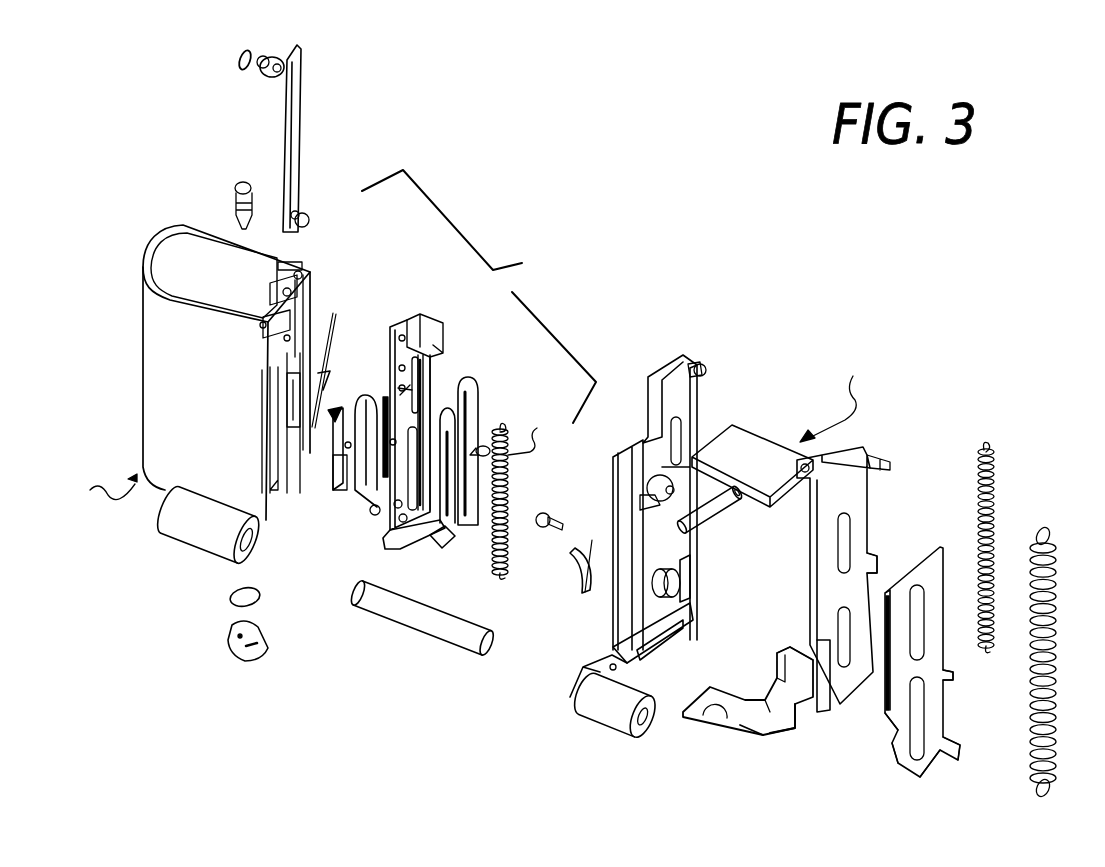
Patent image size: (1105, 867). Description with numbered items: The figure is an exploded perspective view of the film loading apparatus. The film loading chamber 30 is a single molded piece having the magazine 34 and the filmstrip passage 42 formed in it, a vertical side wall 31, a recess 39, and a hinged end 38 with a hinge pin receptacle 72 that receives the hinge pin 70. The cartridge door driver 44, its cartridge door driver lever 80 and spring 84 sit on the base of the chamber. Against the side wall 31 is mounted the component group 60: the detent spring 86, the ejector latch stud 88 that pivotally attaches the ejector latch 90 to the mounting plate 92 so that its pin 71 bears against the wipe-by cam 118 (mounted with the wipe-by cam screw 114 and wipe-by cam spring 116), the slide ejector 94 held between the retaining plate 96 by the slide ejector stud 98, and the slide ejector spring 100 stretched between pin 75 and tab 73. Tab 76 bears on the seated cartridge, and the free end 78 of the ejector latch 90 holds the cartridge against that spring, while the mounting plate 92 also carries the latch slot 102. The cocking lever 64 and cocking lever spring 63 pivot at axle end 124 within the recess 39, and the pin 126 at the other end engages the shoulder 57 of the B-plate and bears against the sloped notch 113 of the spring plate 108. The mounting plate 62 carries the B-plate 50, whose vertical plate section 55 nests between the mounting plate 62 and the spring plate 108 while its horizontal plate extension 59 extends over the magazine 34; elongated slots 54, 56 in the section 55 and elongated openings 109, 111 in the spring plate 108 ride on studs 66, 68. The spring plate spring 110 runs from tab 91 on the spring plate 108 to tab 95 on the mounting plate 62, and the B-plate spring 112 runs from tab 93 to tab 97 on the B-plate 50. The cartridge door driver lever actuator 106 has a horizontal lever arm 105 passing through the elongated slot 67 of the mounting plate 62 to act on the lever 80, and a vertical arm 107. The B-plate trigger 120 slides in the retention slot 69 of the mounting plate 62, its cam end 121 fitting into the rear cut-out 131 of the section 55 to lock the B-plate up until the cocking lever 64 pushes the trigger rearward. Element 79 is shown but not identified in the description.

The film loading chamber 30 is at (101, 482).
The vertical side wall 31 is at (300, 292).
The magazine 34 is at (197, 238).
The hinged end 38 is at (175, 528).
The recess 39 is at (270, 334).
The filmstrip passage 42 is at (272, 384).
The cartridge door driver 44 is at (236, 192).
The B-plate 50 is at (837, 395).
The elongated slot 54 is at (671, 425).
The vertical plate section 55 is at (812, 583).
The elongated slot 56 is at (838, 700).
The shoulder 57 is at (795, 643).
The horizontal plate extension 59 is at (757, 447).
The component group 60 is at (522, 263).
The mounting plate 62 is at (662, 360).
The cocking lever spring 63 is at (240, 52).
The cocking lever 64 is at (300, 112).
The stud 66 is at (640, 470).
The elongated slot 67 is at (655, 652).
The stud 68 is at (690, 580).
The retention slot 69 is at (640, 505).
The hinge pin 70 is at (412, 628).
The pin 71 is at (373, 515).
The hinge pin receptacle 72 is at (607, 720).
The tab 73 is at (445, 540).
The pin 75 is at (432, 395).
The tab 76 is at (390, 548).
The free end 78 is at (345, 470).
The tab 79 is at (292, 500).
The cartridge door driver lever 80 is at (232, 650).
The spring 84 is at (232, 602).
The detent spring 86 is at (336, 313).
The ejector latch stud 88 is at (340, 408).
The ejector latch 90 is at (370, 398).
The tab 91 is at (955, 675).
The mounting plate 92 is at (418, 322).
The tab 93 is at (958, 750).
The slide ejector 94 is at (465, 400).
The tab 95 is at (704, 368).
The retaining plate 96 is at (484, 445).
The tab 97 is at (890, 460).
The slide ejector stud 98 is at (505, 428).
The slide ejector spring 100 is at (537, 427).
The latch slot 102 is at (436, 350).
The lever arm 105 is at (735, 718).
The cartridge door driver lever actuator 106 is at (758, 735).
The vertical arm 107 is at (787, 728).
The spring plate 108 is at (905, 775).
The elongated opening 109 is at (940, 560).
The spring plate spring 110 is at (996, 513).
The elongated opening 111 is at (908, 760).
The B-plate spring 112 is at (1058, 563).
The sloped notch 113 is at (888, 725).
The wipe-by cam screw 114 is at (545, 515).
The wipe-by cam spring 116 is at (568, 550).
The wipe-by cam 118 is at (585, 593).
The B-plate trigger 120 is at (712, 555).
The cam end 121 is at (735, 500).
The axle end 124 is at (262, 70).
The pin 126 is at (305, 213).
The rear cut-out 131 is at (878, 560).